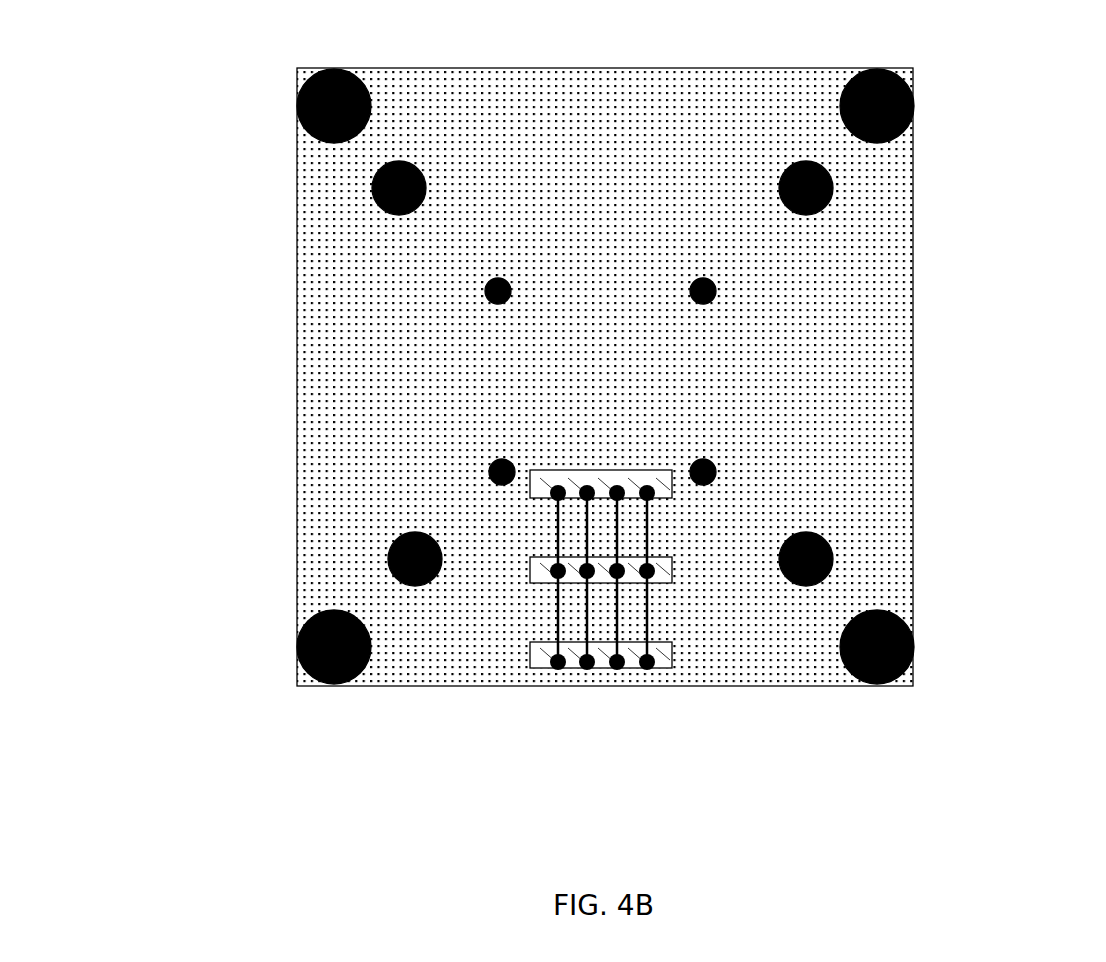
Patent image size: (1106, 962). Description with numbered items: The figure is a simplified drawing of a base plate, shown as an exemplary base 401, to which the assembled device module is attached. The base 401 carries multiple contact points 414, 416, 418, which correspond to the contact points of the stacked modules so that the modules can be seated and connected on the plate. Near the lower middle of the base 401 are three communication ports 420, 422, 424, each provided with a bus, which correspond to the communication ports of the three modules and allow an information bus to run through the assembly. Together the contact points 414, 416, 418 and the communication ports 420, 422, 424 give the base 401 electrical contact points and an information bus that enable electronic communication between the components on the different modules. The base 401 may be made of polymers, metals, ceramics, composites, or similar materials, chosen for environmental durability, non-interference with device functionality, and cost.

The base 401 is at (242, 30).
The contact point 414 is at (715, 287).
The contact point 416 is at (833, 185).
The contact point 418 is at (912, 103).
The communication port 420 is at (655, 497).
The communication port 422 is at (672, 572).
The communication port 424 is at (673, 660).